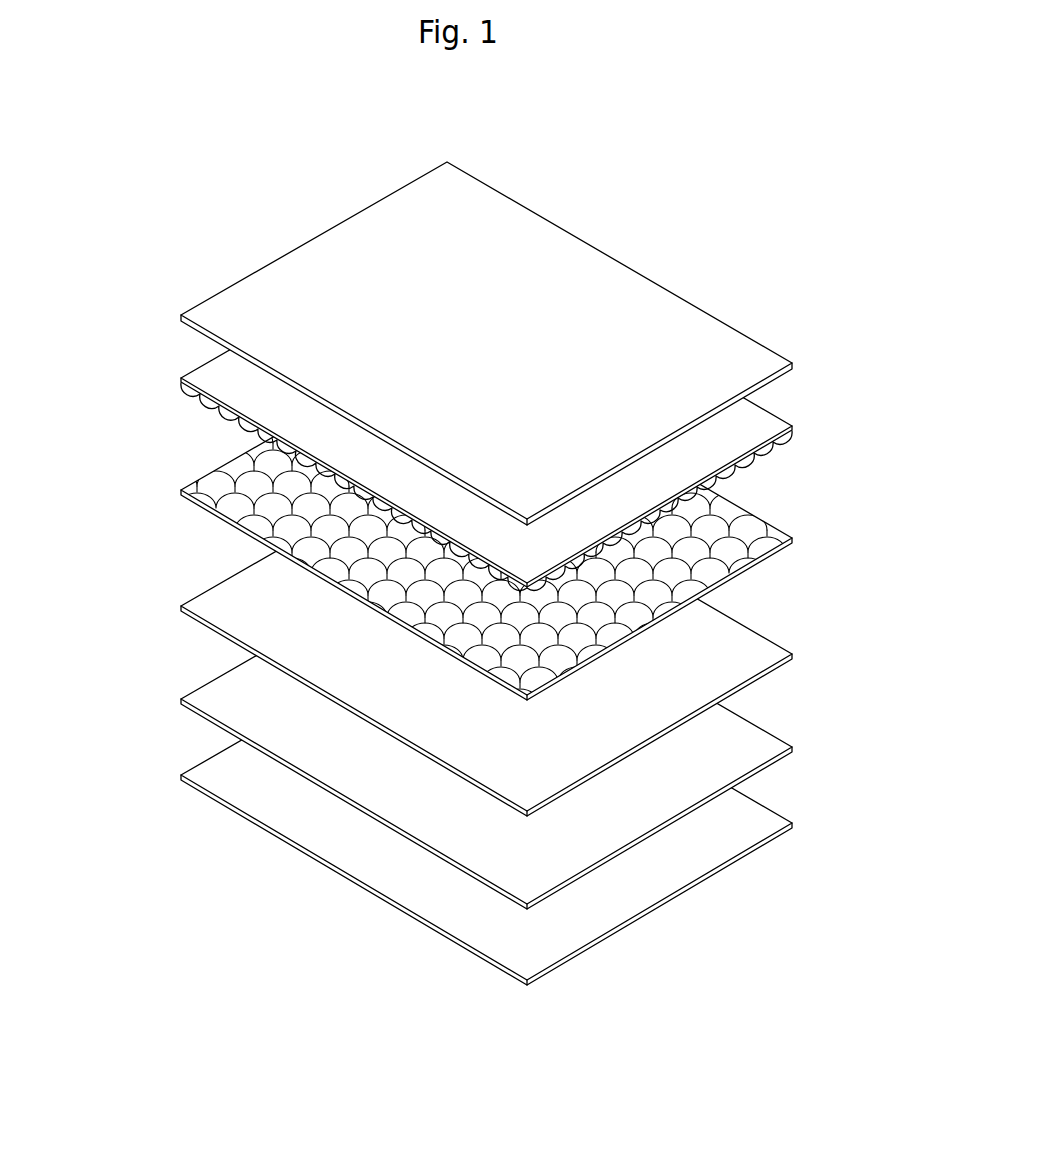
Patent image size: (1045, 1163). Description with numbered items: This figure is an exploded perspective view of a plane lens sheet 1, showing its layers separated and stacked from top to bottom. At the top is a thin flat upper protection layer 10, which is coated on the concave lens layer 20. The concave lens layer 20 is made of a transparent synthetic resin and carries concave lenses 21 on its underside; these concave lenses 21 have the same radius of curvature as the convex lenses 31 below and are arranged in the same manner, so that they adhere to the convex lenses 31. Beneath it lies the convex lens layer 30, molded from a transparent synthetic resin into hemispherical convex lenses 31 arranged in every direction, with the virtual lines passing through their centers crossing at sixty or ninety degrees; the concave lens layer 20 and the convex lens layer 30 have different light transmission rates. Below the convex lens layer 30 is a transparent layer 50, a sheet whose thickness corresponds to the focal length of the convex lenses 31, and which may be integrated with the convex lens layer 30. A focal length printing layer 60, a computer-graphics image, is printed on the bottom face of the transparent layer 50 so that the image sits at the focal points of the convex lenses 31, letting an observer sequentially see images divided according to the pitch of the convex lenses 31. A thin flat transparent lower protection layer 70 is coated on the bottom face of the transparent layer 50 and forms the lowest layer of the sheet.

The plane lens sheet 1 is at (200, 238).
The upper protection layer 10 is at (613, 300).
The concave lens layer 20 is at (486, 407).
The concave lenses 21 is at (202, 413).
The convex lens layer 30 is at (494, 520).
The convex lenses 31 is at (238, 487).
The transparent layer 50 is at (727, 643).
The focal length printing layer 60 is at (740, 737).
The lower protection layer 70 is at (742, 828).